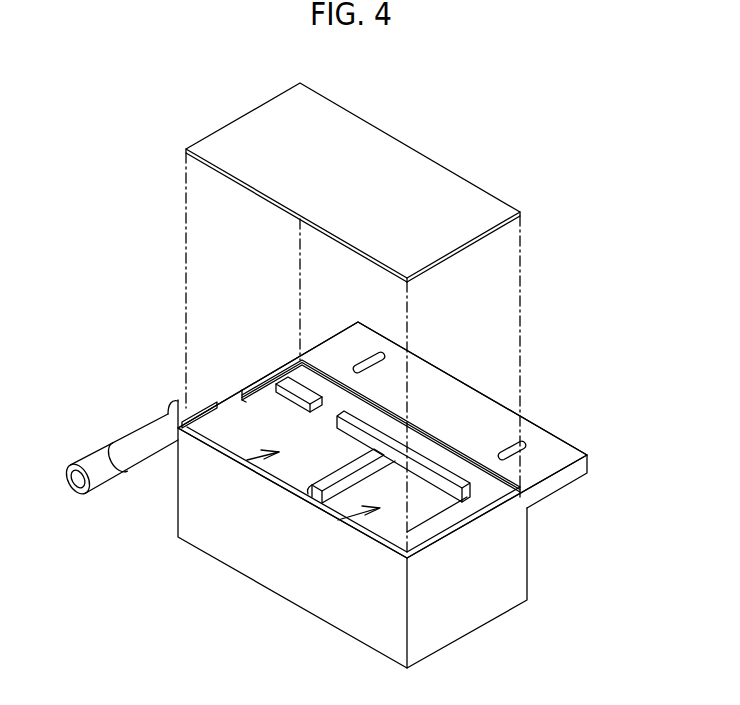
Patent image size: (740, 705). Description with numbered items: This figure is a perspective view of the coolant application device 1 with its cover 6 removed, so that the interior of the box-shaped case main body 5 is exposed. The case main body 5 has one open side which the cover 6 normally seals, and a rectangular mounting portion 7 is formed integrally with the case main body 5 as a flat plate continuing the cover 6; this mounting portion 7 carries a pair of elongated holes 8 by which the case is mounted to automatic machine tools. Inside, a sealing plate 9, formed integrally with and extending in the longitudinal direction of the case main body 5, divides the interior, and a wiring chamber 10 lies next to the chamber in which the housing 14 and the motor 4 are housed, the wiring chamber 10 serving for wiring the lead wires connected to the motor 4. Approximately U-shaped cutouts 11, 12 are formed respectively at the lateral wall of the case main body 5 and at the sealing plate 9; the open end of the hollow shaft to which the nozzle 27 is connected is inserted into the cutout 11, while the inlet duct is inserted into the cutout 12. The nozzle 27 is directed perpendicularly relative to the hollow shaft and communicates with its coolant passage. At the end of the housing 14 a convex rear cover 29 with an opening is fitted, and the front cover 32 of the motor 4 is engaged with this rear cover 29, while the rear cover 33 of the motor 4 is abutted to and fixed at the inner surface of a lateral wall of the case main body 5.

The coolant application device 1 is at (595, 238).
The motor 4 is at (338, 521).
The case main body 5 is at (510, 577).
The cover 6 is at (428, 188).
The mounting portion 7 is at (563, 452).
The elongated holes 8 is at (371, 358).
The sealing plate 9 is at (420, 463).
The wiring chamber 10 is at (455, 467).
The cutout 11 is at (242, 397).
The cutout 12 is at (325, 400).
The housing 14 is at (233, 466).
The nozzle 27 is at (97, 458).
The rear cover 29 is at (297, 493).
The front cover 32 is at (330, 500).
The rear cover 33 is at (440, 523).